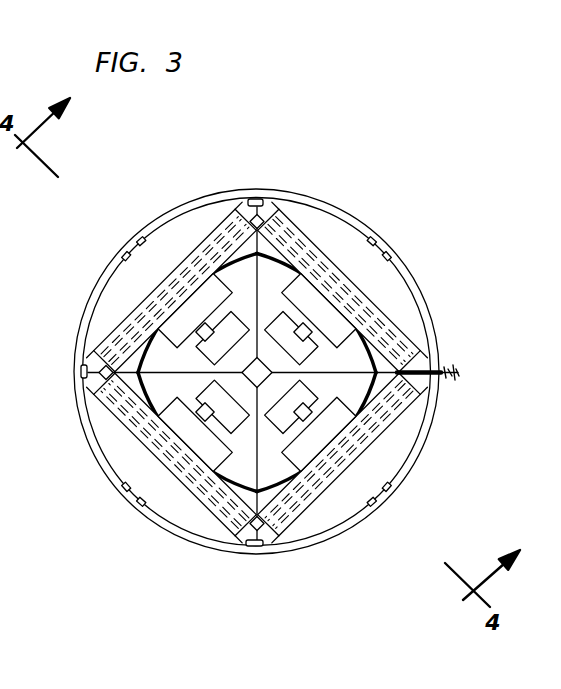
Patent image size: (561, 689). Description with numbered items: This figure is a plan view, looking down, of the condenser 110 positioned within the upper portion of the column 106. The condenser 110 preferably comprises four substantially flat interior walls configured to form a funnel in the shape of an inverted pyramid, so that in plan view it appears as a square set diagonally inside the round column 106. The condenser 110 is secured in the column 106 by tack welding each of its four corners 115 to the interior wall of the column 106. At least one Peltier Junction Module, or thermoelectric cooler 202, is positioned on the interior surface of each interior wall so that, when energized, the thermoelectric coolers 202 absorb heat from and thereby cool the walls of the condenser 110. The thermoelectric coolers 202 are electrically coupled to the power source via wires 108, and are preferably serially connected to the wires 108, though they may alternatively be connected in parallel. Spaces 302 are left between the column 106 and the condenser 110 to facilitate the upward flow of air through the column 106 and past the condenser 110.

The column 106 is at (297, 193).
The wires 108 is at (458, 371).
The condenser 110 is at (298, 345).
The corners 115 is at (250, 199).
The thermoelectric cooler 202 is at (211, 341).
The spaces 302 is at (170, 242).